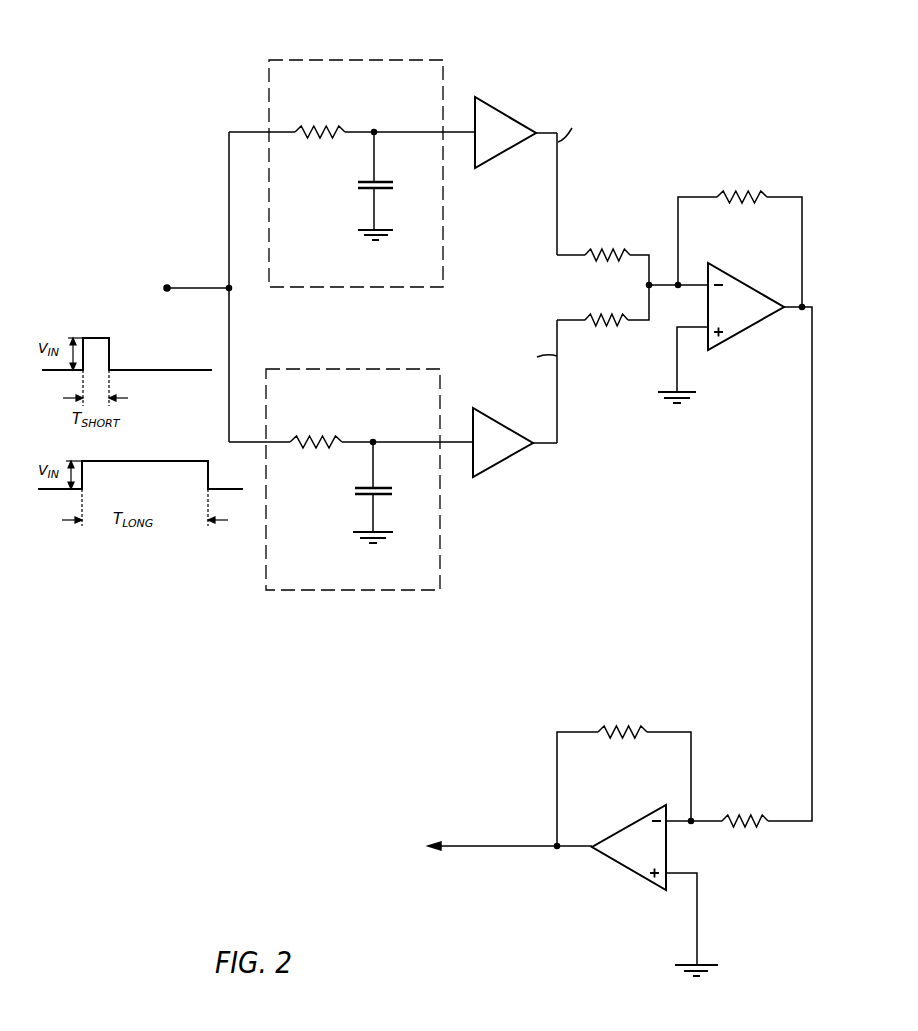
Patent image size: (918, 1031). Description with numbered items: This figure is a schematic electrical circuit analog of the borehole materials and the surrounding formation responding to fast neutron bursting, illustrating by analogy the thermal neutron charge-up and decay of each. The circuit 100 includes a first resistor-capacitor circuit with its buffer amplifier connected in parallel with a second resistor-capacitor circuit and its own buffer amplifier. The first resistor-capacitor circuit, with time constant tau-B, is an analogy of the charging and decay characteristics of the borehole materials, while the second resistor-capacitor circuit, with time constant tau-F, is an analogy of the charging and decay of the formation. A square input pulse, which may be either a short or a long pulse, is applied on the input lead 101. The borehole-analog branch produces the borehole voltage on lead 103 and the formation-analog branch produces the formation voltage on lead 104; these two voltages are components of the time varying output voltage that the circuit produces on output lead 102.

The circuit 100 is at (543, 43).
The lead 101 is at (188, 291).
The lead 102 is at (495, 850).
The lead 103 is at (557, 219).
The lead 104 is at (557, 398).